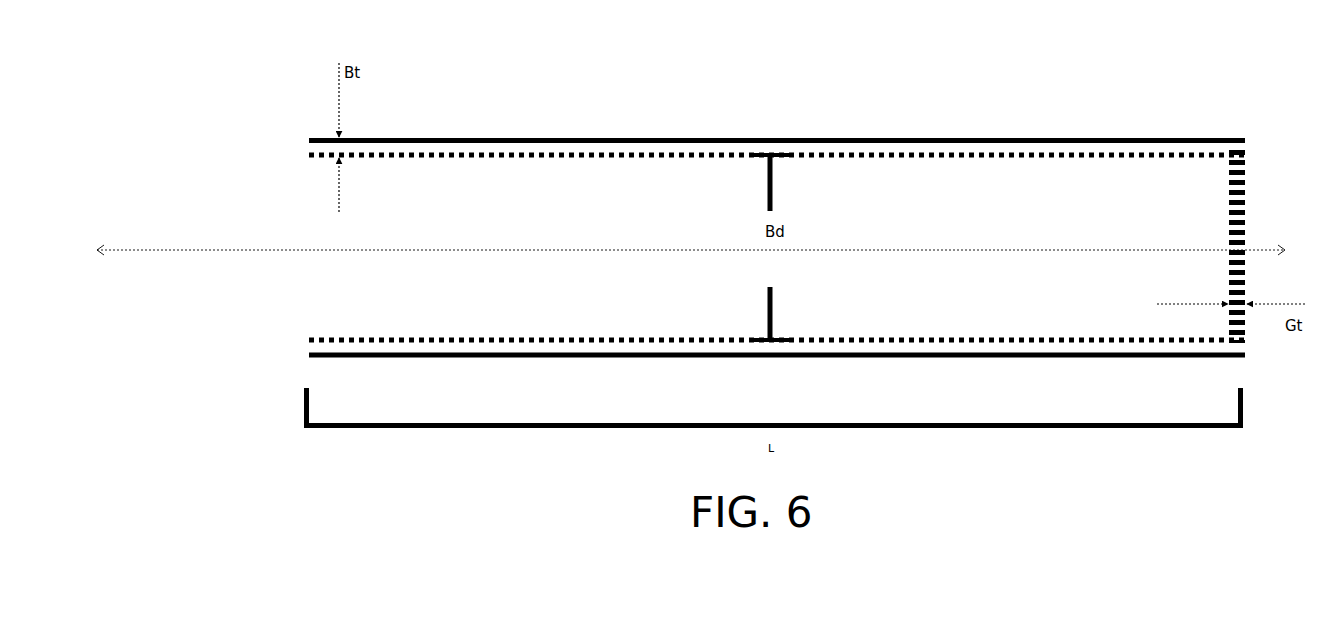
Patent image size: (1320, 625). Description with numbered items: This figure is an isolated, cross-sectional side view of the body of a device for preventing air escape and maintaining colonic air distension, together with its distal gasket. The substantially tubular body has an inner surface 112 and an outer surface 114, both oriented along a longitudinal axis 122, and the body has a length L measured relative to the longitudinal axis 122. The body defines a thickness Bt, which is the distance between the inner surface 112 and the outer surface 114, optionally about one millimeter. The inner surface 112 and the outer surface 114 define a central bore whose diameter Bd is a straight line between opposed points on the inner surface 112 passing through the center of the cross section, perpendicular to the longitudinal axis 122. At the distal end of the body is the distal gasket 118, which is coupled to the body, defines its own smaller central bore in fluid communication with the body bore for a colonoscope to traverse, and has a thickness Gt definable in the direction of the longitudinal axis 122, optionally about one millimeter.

The inner surface 112 is at (503, 159).
The outer surface 114 is at (548, 134).
The distal gasket 118 is at (1243, 179).
The longitudinal axis 122 is at (223, 253).